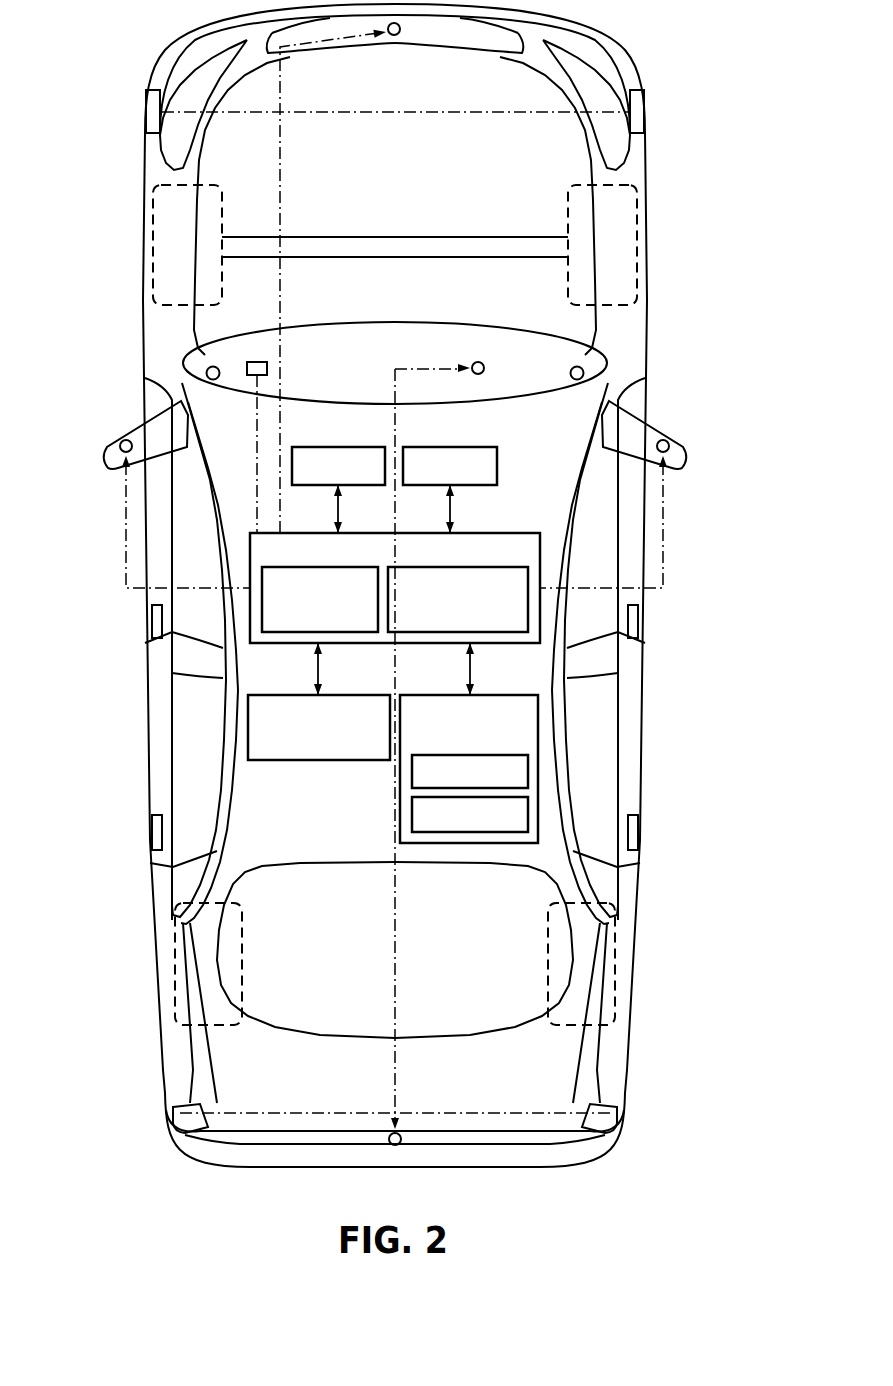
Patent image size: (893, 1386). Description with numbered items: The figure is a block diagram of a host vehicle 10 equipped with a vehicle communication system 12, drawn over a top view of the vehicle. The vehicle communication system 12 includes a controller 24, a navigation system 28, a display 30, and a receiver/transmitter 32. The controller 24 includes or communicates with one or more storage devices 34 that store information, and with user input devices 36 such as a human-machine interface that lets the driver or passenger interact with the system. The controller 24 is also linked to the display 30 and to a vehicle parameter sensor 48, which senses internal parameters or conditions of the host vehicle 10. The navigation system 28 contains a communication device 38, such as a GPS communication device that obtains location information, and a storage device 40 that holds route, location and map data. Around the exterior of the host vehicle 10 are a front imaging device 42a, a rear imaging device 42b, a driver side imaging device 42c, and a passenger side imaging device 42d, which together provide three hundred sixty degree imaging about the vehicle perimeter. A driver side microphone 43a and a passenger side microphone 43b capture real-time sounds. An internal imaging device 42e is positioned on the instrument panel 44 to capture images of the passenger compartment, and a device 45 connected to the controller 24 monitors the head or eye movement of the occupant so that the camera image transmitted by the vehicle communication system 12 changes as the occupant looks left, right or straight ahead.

The host vehicle 10 is at (698, 226).
The vehicle communication system 12 is at (551, 431).
The controller 24 is at (493, 532).
The navigation system 28 is at (489, 693).
The display 30 is at (346, 445).
The receiver/transmitter 32 is at (302, 693).
The storage devices 34 is at (351, 633).
The user input devices 36 is at (431, 633).
The communication device 38 is at (528, 769).
The storage device 40 is at (528, 813).
The front imaging device 42a is at (398, 33).
The rear imaging device 42b is at (389, 1144).
The driver side imaging device 42c is at (122, 441).
The passenger side imaging device 42d is at (668, 441).
The internal imaging device 42e is at (484, 371).
The driver side microphone 43a is at (207, 372).
The passenger side microphone 43b is at (582, 372).
The instrument panel 44 is at (351, 345).
The head or eye movement monitoring device 45 is at (254, 360).
The vehicle parameter sensor 48 is at (459, 445).